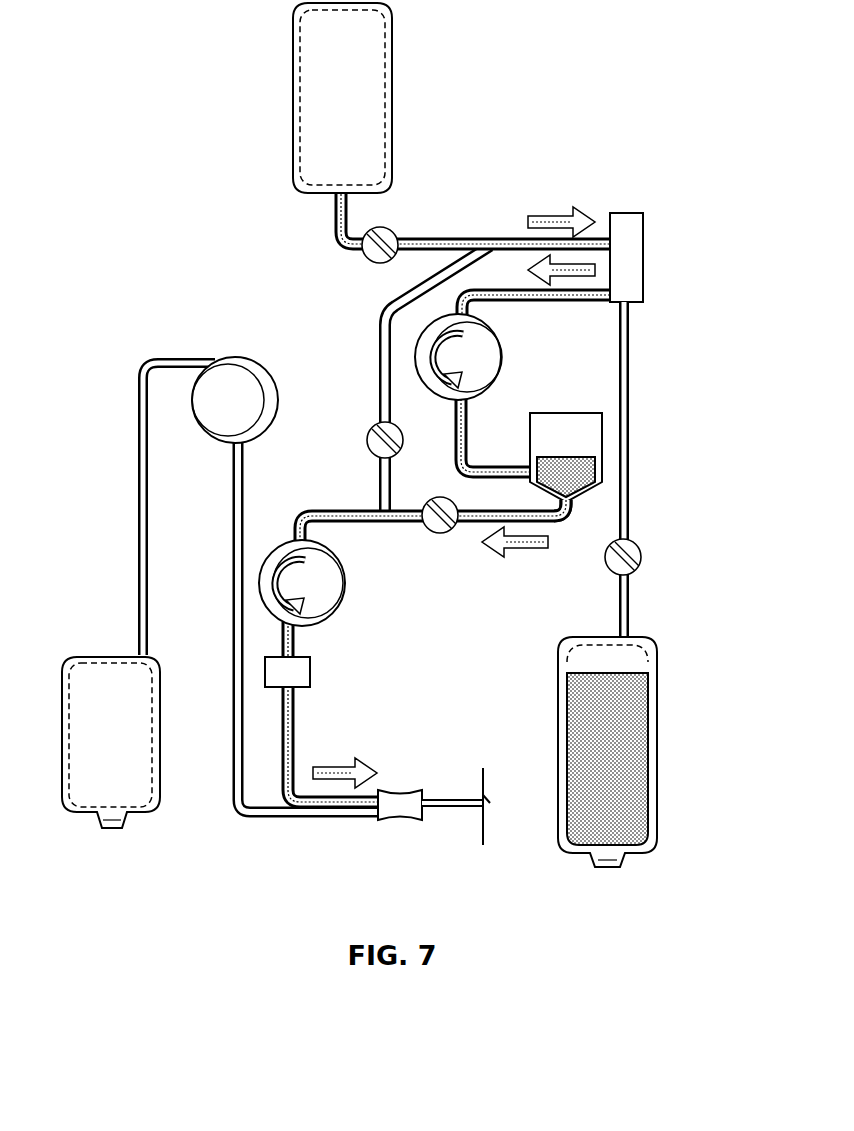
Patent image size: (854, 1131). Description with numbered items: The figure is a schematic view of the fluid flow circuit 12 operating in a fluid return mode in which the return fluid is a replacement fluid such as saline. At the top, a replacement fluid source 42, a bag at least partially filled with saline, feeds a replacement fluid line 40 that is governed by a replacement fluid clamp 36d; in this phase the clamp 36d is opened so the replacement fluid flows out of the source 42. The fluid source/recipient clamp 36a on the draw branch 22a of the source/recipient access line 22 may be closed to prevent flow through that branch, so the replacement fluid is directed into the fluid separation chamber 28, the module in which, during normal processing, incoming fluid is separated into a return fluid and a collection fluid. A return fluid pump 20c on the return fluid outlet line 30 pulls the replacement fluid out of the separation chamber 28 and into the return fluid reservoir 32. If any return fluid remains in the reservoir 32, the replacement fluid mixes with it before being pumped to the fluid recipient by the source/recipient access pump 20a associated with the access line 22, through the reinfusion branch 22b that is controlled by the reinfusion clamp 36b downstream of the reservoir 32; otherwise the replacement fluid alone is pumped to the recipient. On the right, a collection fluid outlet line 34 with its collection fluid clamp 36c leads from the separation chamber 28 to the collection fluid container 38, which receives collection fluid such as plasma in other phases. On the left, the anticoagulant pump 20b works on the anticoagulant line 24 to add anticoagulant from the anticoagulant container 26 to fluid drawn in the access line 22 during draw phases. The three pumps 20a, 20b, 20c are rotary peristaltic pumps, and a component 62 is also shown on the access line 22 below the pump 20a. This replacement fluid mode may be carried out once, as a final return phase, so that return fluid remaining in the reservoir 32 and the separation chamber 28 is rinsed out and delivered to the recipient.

The fluid flow circuit 12 is at (252, 222).
The source/recipient access pump 20a is at (340, 605).
The anticoagulant pump 20b is at (235, 357).
The return fluid pump 20c is at (504, 358).
The source/recipient access line 22 is at (296, 703).
The draw branch 22a is at (378, 346).
The reinfusion branch 22b is at (446, 497).
The anticoagulant line 24 is at (138, 517).
The anticoagulant container 26 is at (111, 742).
The fluid separation chamber 28 is at (645, 263).
The return fluid outlet line 30 is at (532, 303).
The return fluid reservoir 32 is at (604, 452).
The collection fluid outlet line 34 is at (630, 603).
The fluid source/recipient clamp 36a is at (366, 440).
The reinfusion clamp 36b is at (453, 535).
The collection fluid clamp 36c is at (641, 557).
The replacement fluid clamp 36d is at (373, 231).
The collection fluid container 38 is at (657, 737).
The replacement fluid line 40 is at (333, 229).
The replacement fluid source 42 is at (342, 98).
The sensor 62 is at (312, 672).